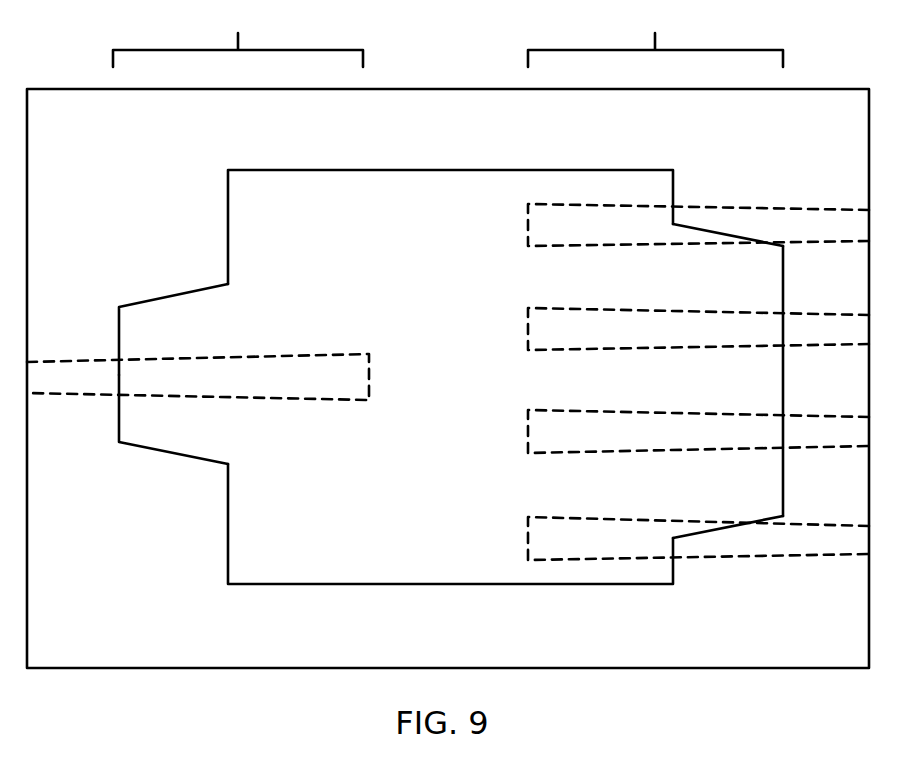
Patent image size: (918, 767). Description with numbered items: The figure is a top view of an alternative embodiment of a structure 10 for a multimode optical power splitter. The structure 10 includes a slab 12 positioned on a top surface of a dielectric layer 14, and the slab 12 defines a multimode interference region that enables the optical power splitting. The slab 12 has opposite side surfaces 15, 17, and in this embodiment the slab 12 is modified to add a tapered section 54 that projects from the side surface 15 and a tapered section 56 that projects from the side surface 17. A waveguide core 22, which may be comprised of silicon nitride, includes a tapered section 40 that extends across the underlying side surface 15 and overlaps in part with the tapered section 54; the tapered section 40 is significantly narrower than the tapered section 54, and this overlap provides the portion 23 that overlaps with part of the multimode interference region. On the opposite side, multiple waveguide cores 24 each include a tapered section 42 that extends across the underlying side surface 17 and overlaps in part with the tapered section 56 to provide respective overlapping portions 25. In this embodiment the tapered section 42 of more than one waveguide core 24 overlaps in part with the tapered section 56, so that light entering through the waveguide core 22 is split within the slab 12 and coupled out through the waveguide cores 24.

The structure 10 is at (445, 383).
The slab 12 is at (437, 540).
The dielectric layer 14 is at (125, 629).
The side surface 15 is at (228, 486).
The side surface 17 is at (673, 566).
The waveguide core 22 is at (198, 368).
The portion 23 is at (238, 35).
The waveguide cores 24 is at (698, 340).
The portion 25 is at (655, 35).
The tapered section 40 is at (320, 385).
The tapered section 42 is at (593, 220).
The tapered section 54 is at (170, 330).
The tapered section 56 is at (707, 282).